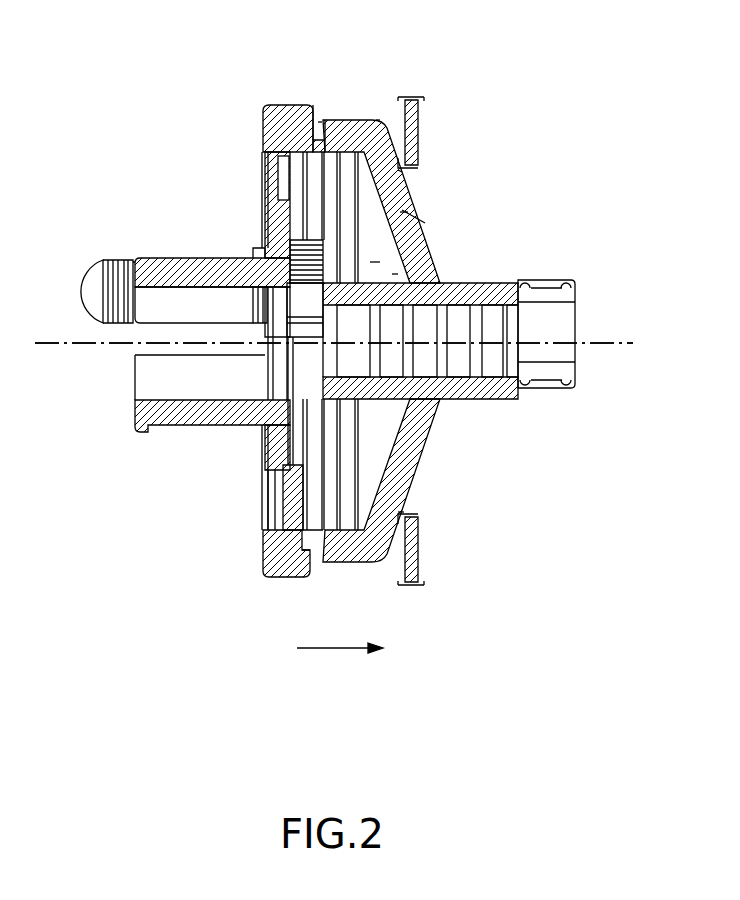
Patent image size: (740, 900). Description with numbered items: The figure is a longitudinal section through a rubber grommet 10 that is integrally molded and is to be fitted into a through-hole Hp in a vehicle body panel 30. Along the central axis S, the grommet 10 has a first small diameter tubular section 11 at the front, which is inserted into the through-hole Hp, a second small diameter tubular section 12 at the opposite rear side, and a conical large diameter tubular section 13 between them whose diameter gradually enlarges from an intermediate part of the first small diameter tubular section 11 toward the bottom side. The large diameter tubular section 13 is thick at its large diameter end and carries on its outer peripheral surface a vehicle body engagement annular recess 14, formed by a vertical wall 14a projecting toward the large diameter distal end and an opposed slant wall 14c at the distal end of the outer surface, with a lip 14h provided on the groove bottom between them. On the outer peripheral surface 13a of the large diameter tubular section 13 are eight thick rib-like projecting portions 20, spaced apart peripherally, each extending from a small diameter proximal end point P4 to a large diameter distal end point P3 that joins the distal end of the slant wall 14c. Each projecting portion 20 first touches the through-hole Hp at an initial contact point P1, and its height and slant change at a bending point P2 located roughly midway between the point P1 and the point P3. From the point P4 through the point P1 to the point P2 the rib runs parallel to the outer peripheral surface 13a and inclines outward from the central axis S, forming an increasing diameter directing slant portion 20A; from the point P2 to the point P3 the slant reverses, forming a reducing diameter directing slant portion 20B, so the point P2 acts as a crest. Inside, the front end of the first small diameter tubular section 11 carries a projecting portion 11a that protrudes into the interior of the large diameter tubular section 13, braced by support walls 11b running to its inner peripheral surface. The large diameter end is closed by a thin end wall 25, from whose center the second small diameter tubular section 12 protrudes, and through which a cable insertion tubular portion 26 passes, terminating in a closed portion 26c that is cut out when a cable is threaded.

The grommet 10 is at (73, 40).
The first small diameter tubular section 11 is at (468, 401).
The projecting portion 11a is at (378, 262).
The support walls 11b is at (405, 212).
The second small diameter tubular section 12 is at (135, 407).
The large diameter tubular section 13 is at (430, 446).
The outer peripheral surface 13a is at (424, 223).
The vehicle body engagement annular recess 14 is at (286, 336).
The vertical wall 14a is at (280, 122).
The slant wall 14c is at (277, 157).
The lip 14h is at (313, 560).
The projecting portions 20 is at (423, 401).
The increasing diameter directing slant portion 20A is at (390, 563).
The reducing diameter directing slant portion 20B is at (370, 565).
The end wall 25 is at (263, 452).
The cable insertion tubular portion 26 is at (167, 256).
The closed portion 26c is at (88, 258).
The vehicle body panel 30 is at (418, 552).
The through-hole Hp is at (398, 512).
The initial contact point P1 is at (400, 172).
The bending point P2 is at (378, 120).
The distal end point P3 is at (323, 122).
The proximal end point P4 is at (395, 274).
The central axis S is at (597, 343).